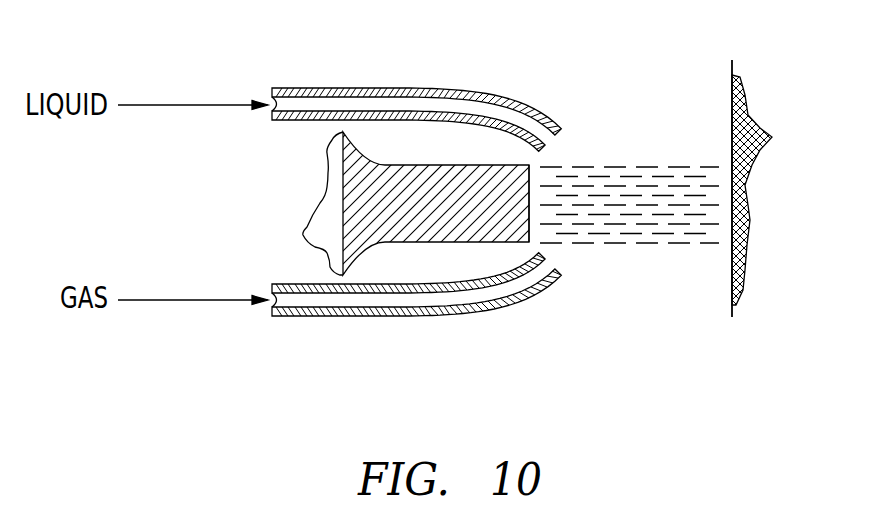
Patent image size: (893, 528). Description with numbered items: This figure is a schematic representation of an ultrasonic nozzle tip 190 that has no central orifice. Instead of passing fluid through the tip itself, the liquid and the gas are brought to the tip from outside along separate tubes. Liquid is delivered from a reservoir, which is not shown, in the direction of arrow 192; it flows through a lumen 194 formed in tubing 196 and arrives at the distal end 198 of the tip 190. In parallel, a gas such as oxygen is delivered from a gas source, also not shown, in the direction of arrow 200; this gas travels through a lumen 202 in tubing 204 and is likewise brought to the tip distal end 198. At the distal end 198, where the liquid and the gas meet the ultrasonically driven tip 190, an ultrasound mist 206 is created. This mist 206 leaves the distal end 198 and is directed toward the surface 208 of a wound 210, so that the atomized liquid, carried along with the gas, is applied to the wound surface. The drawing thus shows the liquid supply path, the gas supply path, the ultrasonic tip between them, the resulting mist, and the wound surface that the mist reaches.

The ultrasonic nozzle tip 190 is at (480, 215).
The arrow 192 is at (180, 105).
The lumen 194 is at (342, 109).
The tubing 196 is at (507, 96).
The distal end 198 is at (531, 222).
The arrow 200 is at (193, 300).
The lumen 202 is at (382, 302).
The tubing 204 is at (488, 316).
The ultrasound mist 206 is at (618, 195).
The surface 208 is at (731, 102).
The wound 210 is at (773, 134).